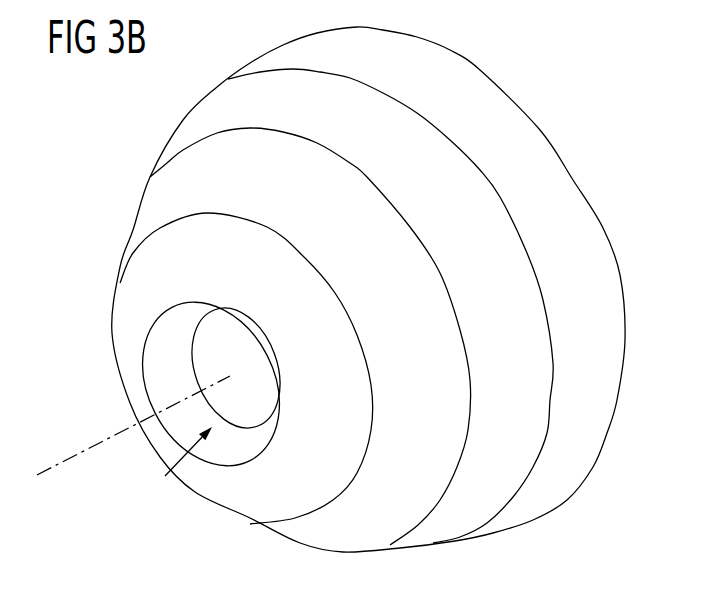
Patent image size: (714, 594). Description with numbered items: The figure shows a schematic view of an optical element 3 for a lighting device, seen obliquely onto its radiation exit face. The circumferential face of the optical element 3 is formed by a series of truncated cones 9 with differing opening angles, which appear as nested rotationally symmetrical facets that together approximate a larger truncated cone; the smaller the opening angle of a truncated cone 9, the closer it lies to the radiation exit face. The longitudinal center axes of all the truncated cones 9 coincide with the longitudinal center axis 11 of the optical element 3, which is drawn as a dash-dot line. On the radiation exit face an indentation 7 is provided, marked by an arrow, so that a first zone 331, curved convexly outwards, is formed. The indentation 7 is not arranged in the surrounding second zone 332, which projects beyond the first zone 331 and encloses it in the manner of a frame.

The optical element 3 is at (583, 138).
The truncated cones 9 is at (478, 118).
The second zone 332 is at (190, 282).
The first zone 331 is at (246, 369).
The longitudinal center axis 11 is at (78, 452).
The indentation 7 is at (165, 476).